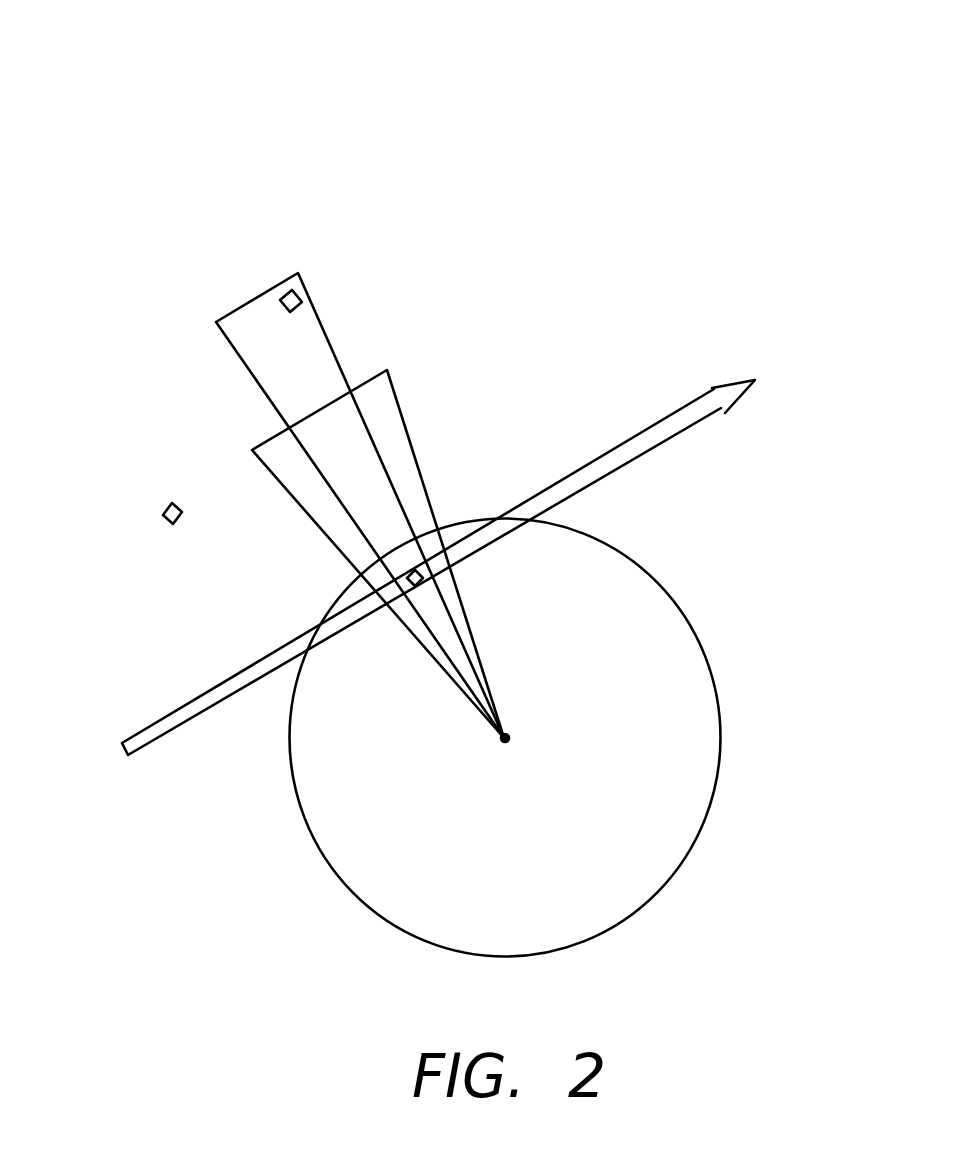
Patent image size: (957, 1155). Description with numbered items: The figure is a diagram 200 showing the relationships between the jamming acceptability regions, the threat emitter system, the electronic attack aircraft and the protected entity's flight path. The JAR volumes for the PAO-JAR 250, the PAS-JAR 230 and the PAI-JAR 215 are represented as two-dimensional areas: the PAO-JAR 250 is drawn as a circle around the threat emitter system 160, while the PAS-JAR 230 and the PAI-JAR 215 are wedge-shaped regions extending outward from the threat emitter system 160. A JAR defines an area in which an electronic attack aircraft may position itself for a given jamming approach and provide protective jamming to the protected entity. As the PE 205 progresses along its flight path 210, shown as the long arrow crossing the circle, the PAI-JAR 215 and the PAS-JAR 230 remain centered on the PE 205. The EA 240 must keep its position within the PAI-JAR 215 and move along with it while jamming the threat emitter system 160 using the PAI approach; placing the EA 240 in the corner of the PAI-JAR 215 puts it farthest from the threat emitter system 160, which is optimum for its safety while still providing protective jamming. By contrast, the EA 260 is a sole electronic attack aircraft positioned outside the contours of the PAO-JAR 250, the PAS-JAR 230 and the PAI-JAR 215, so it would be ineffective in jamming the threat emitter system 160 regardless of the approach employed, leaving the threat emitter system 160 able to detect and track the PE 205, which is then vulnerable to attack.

The threat emitter system 160 is at (507, 745).
The diagram 200 is at (578, 256).
The protected entity 205 is at (420, 590).
The flight path 210 is at (629, 446).
The PAI-JAR 215 is at (231, 345).
The PAS-JAR 230 is at (393, 394).
The electronic attack aircraft 240 is at (280, 300).
The PAO-JAR 250 is at (693, 623).
The electronic attack aircraft 260 is at (167, 520).